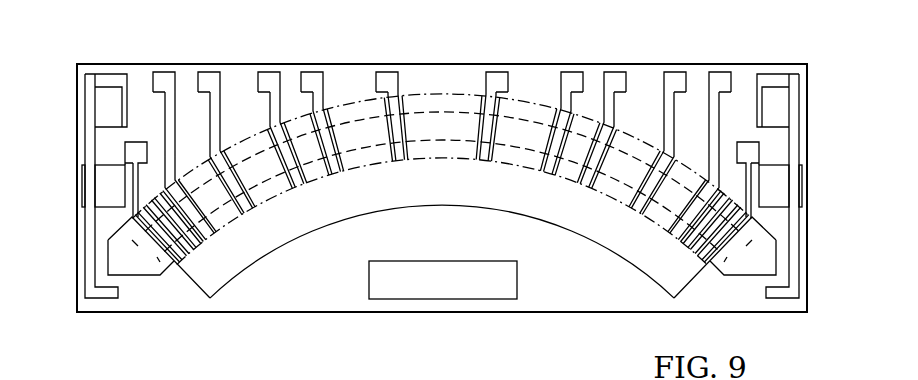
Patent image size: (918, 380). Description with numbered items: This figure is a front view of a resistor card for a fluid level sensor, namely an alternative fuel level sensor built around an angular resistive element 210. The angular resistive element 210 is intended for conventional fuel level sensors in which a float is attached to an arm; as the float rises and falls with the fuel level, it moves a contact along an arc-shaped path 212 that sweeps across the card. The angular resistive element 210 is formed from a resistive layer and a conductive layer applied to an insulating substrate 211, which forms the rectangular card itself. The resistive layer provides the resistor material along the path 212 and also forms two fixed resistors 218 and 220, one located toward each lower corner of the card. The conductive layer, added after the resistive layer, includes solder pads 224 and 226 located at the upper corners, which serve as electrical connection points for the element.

The angular resistive element 210 is at (589, 61).
The insulating substrate 211 is at (333, 63).
The path 212 is at (355, 152).
The fixed resistor 218 is at (108, 207).
The fixed resistor 220 is at (776, 207).
The solder pad 224 is at (103, 108).
The solder pad 226 is at (781, 108).